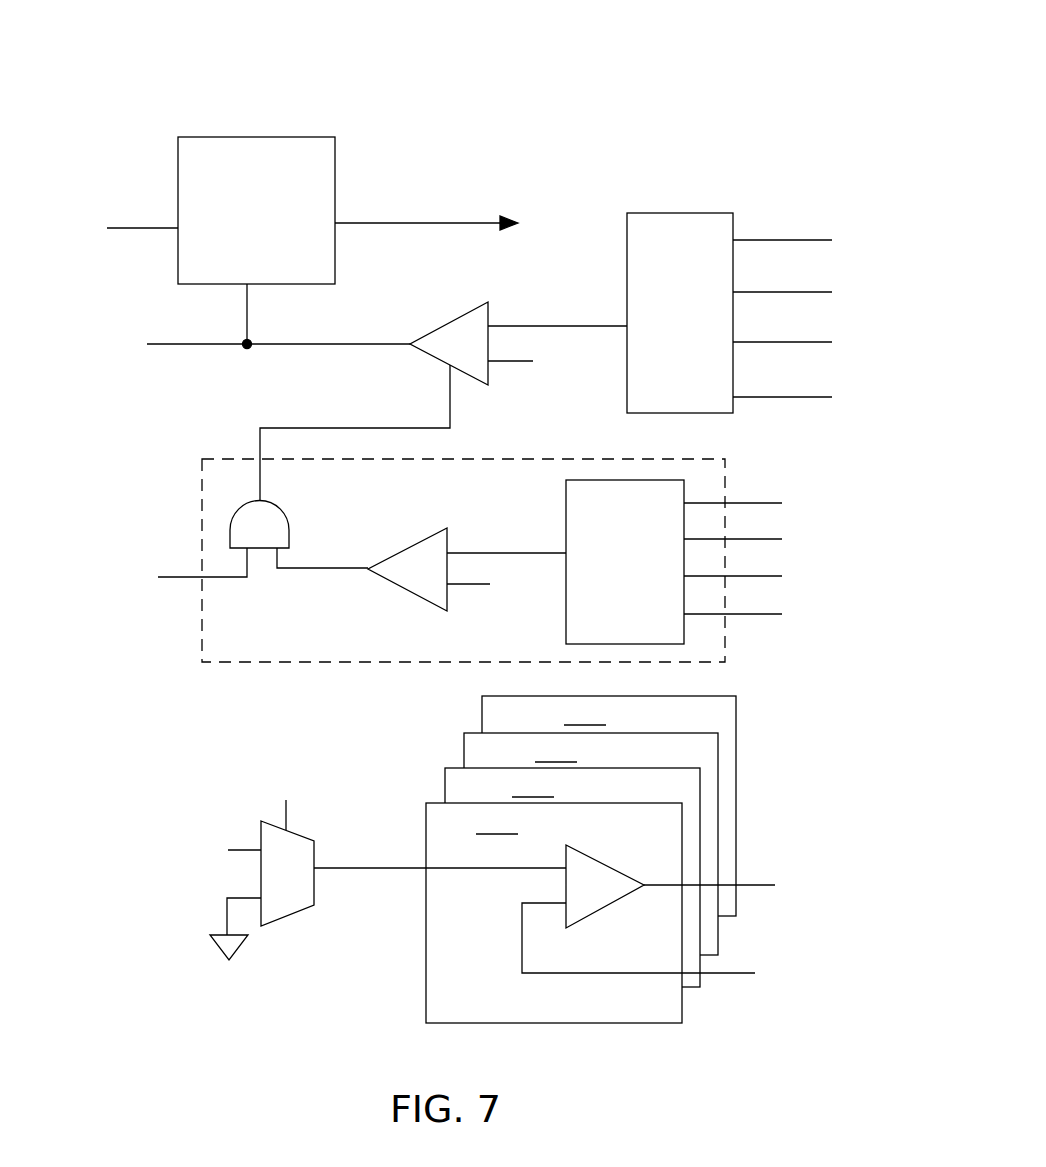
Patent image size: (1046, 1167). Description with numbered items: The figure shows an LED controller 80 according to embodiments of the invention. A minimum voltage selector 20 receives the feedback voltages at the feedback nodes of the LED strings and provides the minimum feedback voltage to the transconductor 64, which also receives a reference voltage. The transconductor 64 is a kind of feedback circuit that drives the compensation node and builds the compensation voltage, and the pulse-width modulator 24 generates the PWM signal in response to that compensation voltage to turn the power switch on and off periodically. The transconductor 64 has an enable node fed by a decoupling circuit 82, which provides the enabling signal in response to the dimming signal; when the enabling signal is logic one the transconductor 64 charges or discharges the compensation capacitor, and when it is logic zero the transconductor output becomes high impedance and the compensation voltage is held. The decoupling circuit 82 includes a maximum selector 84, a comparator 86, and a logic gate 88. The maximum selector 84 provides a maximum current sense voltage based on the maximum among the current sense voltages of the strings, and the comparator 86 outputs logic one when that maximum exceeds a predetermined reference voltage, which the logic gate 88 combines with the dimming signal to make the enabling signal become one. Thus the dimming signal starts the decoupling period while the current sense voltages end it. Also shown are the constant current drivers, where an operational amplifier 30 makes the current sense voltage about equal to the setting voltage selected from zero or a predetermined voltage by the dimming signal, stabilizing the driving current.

The LED controller 80 is at (452, 80).
The pulse-width modulator 24 is at (269, 259).
The transconductor 64 is at (452, 318).
The minimum voltage selector 20 is at (694, 372).
The decoupling circuit 82 is at (230, 458).
The logic gate 88 is at (237, 513).
The comparator 86 is at (410, 545).
The maximum selector 84 is at (637, 588).
The operational amplifier 30 is at (600, 910).